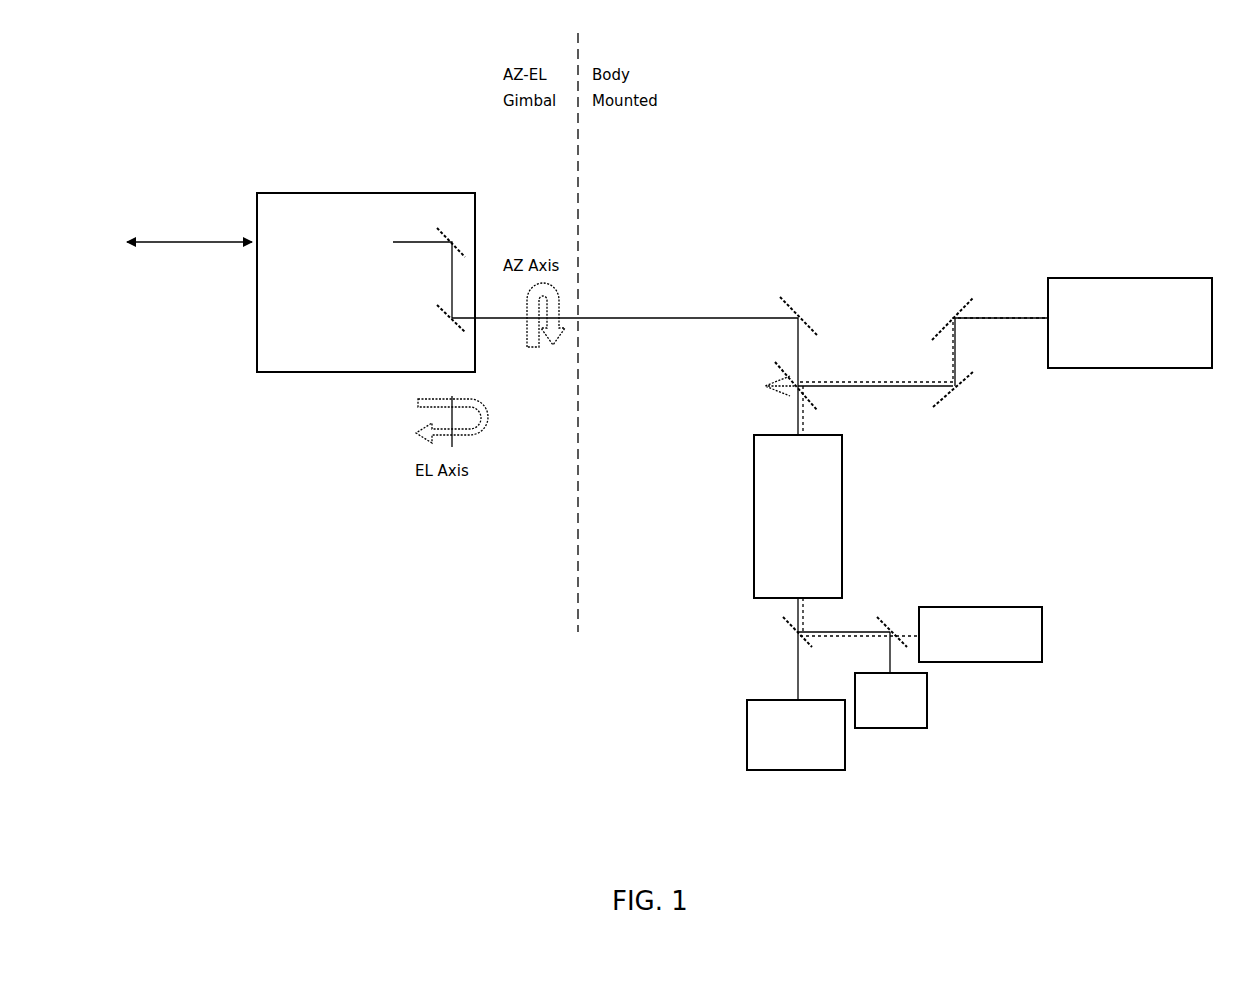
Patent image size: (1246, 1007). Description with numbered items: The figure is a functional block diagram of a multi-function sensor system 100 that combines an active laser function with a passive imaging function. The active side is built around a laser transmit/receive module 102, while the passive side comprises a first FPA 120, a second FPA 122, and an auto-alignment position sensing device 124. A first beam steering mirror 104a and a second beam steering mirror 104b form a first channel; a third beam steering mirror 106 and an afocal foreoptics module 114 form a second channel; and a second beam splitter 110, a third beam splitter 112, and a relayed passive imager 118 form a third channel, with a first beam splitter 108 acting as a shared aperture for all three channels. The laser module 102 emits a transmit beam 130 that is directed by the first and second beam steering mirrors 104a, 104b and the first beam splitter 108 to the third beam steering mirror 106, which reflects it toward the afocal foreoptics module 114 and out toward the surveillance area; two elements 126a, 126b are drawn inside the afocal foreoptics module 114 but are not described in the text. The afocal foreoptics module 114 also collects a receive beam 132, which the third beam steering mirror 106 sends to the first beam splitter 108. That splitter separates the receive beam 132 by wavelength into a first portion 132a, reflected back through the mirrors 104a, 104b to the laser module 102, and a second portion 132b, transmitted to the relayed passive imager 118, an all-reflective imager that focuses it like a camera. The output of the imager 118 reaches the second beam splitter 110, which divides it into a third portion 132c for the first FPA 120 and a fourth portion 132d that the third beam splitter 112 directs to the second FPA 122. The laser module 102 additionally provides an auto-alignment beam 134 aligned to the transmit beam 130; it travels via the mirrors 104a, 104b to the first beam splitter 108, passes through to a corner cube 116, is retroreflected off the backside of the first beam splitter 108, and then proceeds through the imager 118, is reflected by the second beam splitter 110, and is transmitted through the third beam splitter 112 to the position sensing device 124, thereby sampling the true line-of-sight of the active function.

The multi-function sensor system 100 is at (1050, 58).
The laser transmit/receive module 102 is at (1133, 275).
The first beam steering mirror 104a is at (938, 318).
The second beam steering mirror 104b is at (968, 395).
The third beam steering mirror 106 is at (809, 313).
The first beam splitter 108 is at (808, 373).
The second beam splitter 110 is at (777, 628).
The third beam splitter 112 is at (888, 605).
The afocal foreoptics module 114 is at (340, 192).
The corner cube 116 is at (752, 388).
The relayed passive imager 118 is at (753, 520).
The first focal plane array 120 is at (796, 750).
The second focal plane array 122 is at (891, 715).
The auto-alignment position sensing device 124 is at (1015, 604).
The gimbal fold mirror 126a is at (447, 332).
The gimbal fold mirror 126b is at (448, 231).
The transmit beam 130 is at (692, 290).
The receive beam 132 is at (800, 543).
The first portion of the receive beam 132a is at (867, 390).
The second portion of the receive beam 132b is at (797, 413).
The third portion of the receive beam 132c is at (795, 670).
The fourth portion of the receive beam 132d is at (842, 633).
The auto-alignment beam 134 is at (898, 380).